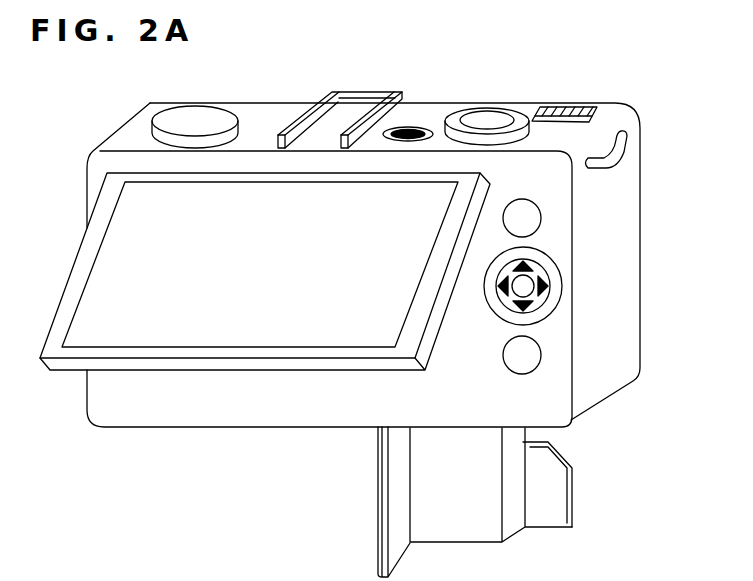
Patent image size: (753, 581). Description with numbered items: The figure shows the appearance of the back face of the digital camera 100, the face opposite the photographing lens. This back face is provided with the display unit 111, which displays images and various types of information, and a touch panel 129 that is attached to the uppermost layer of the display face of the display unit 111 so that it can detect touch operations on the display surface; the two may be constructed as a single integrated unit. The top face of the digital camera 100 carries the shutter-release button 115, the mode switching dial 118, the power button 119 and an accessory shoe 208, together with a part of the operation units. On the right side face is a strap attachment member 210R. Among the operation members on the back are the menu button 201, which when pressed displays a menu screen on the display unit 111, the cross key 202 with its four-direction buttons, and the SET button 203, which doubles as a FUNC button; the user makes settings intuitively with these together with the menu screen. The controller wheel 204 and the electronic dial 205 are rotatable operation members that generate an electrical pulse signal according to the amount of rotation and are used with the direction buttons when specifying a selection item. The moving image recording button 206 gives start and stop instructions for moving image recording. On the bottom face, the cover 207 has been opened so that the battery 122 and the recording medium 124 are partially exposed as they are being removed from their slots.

The digital camera 100 is at (155, 428).
The display unit 111 is at (265, 321).
The touch panel 129 is at (273, 372).
The mode switching dial 118 is at (193, 117).
The accessory shoe 208 is at (327, 91).
The power button 119 is at (410, 127).
The shutter-release button 115 is at (485, 116).
The electronic dial 205 is at (555, 106).
The strap attachment member 210R is at (641, 154).
The moving image recording button 206 is at (541, 215).
The cross key 202 is at (588, 289).
The SET button 203 is at (524, 287).
The controller wheel 204 is at (542, 313).
The menu button 201 is at (541, 353).
The cover 207 is at (393, 522).
The battery 122 is at (484, 543).
The recording medium 124 is at (557, 528).